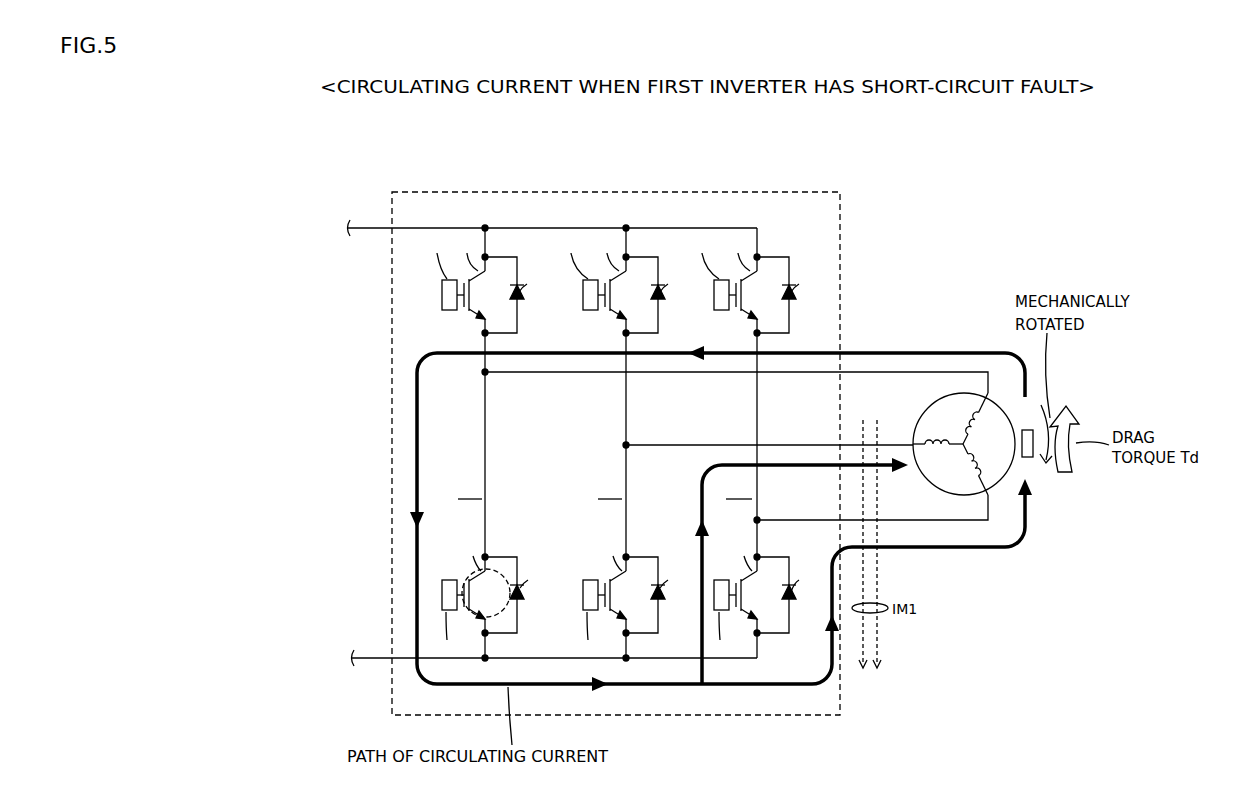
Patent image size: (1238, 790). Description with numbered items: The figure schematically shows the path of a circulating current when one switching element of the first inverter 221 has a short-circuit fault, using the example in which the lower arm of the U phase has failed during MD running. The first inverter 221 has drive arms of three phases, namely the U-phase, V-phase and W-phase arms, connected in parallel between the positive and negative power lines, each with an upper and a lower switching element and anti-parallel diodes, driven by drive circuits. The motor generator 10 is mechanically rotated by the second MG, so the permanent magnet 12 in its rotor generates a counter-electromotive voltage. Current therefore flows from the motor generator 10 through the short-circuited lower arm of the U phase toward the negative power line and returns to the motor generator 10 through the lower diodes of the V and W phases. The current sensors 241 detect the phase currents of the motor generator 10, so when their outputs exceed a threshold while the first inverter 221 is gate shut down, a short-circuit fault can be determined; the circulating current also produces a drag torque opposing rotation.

The first inverter 221 is at (806, 191).
The motor generator 10 is at (932, 400).
The permanent magnet 12 is at (1030, 460).
The current sensors 241 is at (862, 432).